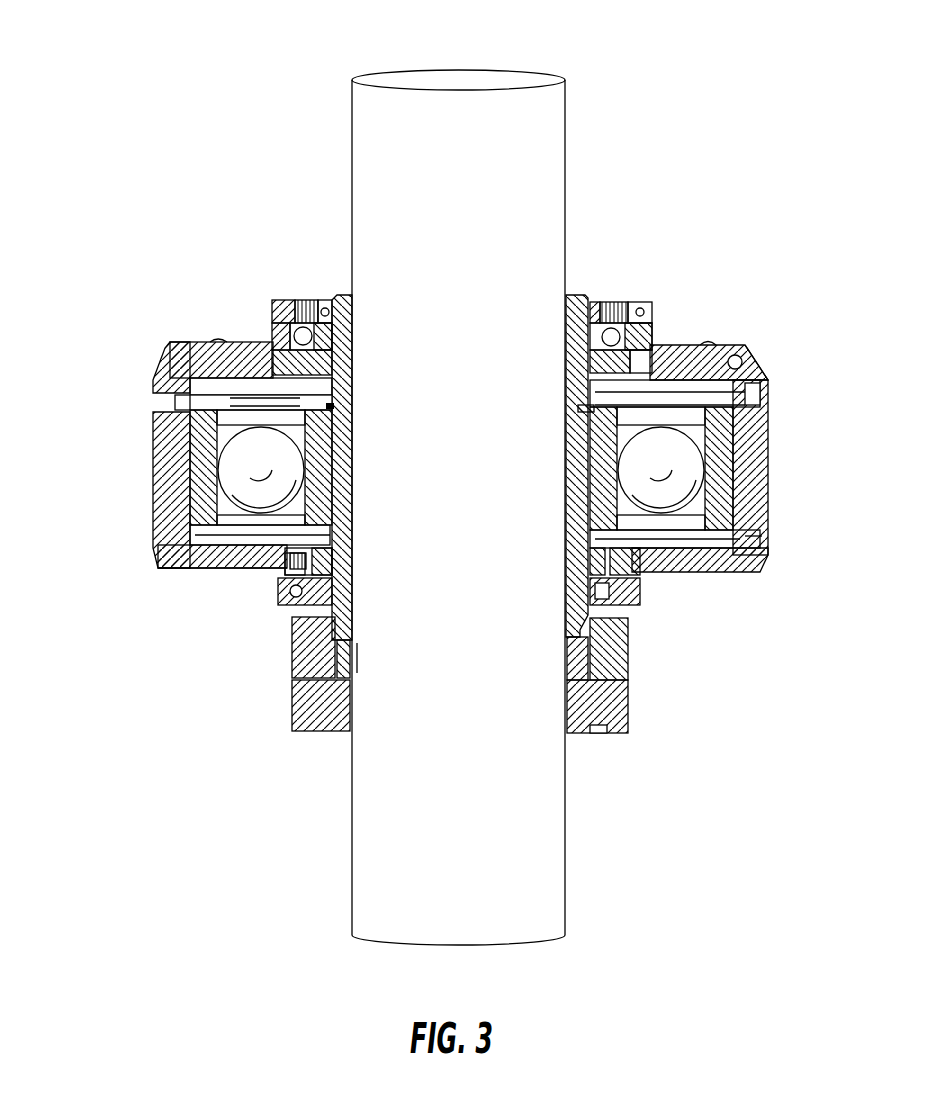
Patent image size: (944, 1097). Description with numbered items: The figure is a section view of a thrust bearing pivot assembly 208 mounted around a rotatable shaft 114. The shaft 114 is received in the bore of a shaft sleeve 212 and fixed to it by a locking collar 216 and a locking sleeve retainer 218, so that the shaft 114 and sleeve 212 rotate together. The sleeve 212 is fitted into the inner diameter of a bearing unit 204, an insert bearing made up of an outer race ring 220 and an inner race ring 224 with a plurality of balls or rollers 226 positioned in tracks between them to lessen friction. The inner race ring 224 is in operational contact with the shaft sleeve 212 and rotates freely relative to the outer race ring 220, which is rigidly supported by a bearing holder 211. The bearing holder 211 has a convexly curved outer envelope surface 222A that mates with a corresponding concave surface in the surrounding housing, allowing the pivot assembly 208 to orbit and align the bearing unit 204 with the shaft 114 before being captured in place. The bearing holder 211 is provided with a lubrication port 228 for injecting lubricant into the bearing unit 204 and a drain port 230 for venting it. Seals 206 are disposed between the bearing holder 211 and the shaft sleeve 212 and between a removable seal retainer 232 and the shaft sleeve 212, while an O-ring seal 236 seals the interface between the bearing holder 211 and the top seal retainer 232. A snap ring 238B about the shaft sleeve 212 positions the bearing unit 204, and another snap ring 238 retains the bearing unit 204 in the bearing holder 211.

The shaft 114 is at (413, 72).
The bearing unit 204 is at (228, 466).
The seals 206 is at (314, 300).
The pivot assembly 208 is at (205, 394).
The bearing holder 211 is at (175, 568).
The shaft sleeve 212 is at (625, 700).
The locking collar 216 is at (333, 663).
The locking sleeve retainer 218 is at (350, 677).
The outer race ring 220 is at (210, 512).
The outer envelope surface 222A is at (152, 547).
The inner race ring 224 is at (305, 428).
The balls or rollers 226 is at (683, 468).
The lubrication port 228 is at (760, 392).
The drain port 230 is at (752, 537).
The seal retainer 232 is at (705, 341).
The O-ring seal 236 is at (285, 553).
The snap ring 238 is at (587, 555).
The snap ring 238B is at (585, 410).